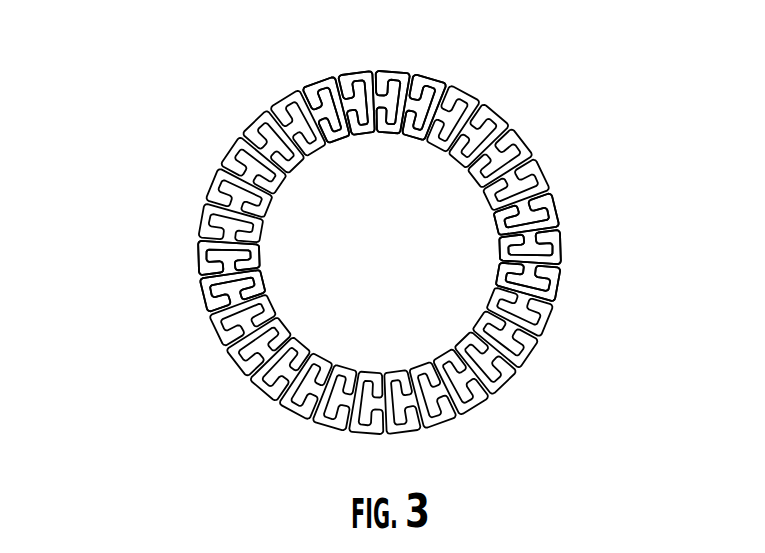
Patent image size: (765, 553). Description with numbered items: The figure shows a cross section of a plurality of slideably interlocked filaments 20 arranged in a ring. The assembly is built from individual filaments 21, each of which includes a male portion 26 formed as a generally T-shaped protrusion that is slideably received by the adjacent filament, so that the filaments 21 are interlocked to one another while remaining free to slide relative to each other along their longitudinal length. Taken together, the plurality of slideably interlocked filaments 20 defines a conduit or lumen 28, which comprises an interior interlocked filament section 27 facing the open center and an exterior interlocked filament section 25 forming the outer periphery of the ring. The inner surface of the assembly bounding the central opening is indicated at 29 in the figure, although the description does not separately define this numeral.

The plurality of slideably interlocked filaments 20 is at (177, 205).
The individual filament 21 is at (560, 212).
The exterior interlocked filament section 25 is at (338, 79).
The male portion 26 is at (201, 298).
The interior interlocked filament section 27 is at (392, 116).
The conduit/lumen 28 is at (198, 249).
The inner bore 29 is at (399, 197).